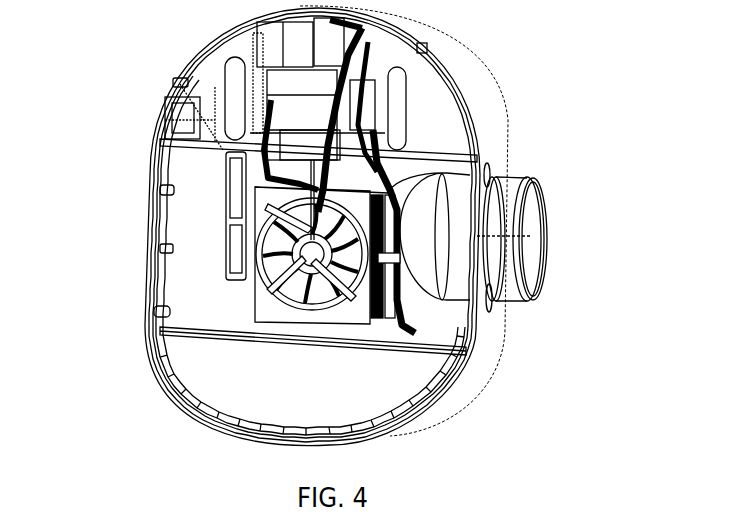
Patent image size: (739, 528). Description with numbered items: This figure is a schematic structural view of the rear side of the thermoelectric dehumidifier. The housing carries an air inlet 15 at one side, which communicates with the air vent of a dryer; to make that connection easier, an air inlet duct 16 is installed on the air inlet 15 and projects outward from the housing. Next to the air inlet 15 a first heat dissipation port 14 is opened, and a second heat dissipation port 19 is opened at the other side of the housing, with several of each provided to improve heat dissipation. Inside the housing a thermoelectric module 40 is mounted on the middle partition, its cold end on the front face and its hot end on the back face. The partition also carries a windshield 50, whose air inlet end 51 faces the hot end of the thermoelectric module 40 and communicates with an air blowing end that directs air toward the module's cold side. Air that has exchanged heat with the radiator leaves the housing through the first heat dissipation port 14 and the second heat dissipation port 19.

The first heat dissipation port 14 is at (508, 158).
The air inlet 15 is at (535, 242).
The air inlet duct 16 is at (520, 177).
The second heat dissipation port 19 is at (160, 118).
The thermoelectric module 40 is at (367, 179).
The windshield 50 is at (152, 292).
The air inlet end 51 is at (180, 83).